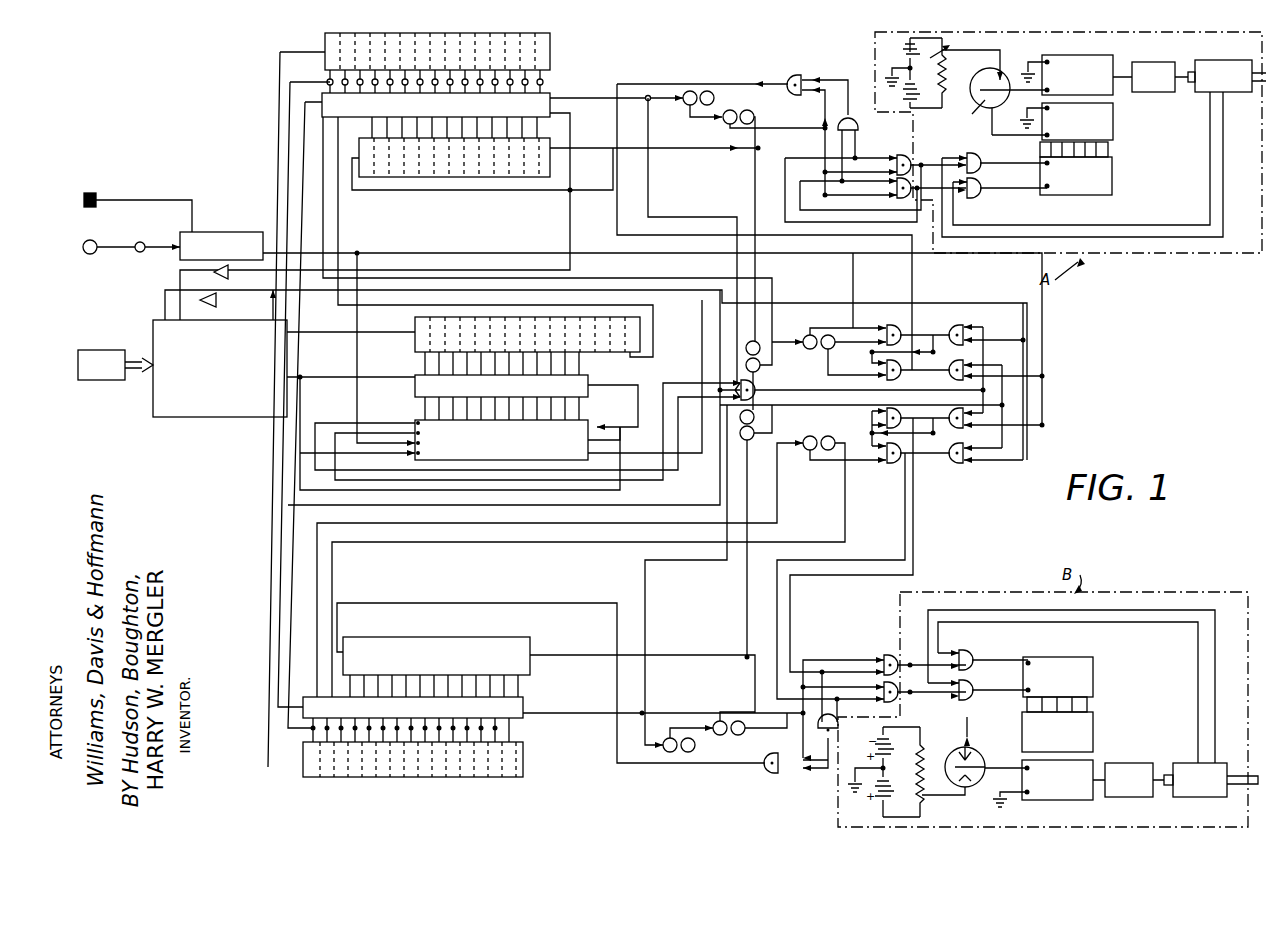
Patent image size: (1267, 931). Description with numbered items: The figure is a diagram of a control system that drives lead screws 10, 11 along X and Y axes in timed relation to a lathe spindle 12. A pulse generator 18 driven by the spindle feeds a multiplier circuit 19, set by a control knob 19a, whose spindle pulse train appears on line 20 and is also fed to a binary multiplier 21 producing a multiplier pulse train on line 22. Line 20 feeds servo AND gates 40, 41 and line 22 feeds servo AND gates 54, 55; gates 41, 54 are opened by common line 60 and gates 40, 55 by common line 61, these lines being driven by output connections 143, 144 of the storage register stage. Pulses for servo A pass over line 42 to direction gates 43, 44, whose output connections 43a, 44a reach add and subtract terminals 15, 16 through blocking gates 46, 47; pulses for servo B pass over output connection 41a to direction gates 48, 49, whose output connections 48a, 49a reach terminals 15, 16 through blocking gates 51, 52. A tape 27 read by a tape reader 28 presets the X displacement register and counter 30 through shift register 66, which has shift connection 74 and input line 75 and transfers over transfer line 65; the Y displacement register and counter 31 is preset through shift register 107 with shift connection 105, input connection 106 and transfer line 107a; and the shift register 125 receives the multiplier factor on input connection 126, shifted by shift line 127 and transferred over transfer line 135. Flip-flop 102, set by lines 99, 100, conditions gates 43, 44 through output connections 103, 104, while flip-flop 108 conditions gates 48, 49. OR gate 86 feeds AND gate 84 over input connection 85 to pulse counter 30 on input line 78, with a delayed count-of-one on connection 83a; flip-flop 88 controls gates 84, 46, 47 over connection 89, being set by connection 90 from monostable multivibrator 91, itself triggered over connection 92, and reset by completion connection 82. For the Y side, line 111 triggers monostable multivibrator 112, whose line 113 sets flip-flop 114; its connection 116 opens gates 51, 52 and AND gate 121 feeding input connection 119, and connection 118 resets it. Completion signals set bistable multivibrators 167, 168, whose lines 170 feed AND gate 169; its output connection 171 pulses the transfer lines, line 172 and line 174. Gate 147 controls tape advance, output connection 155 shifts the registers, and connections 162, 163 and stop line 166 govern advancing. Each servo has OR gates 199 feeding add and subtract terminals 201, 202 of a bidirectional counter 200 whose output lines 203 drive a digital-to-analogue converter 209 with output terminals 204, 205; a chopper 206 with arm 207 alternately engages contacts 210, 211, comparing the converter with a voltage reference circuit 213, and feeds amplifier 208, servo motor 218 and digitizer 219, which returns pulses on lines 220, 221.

The lead screw 10 is at (1258, 88).
The lead screw 11 is at (1234, 775).
The lathe spindle 12 is at (96, 240).
The add input terminal 15 is at (922, 162).
The subtract input terminal 16 is at (925, 186).
The pulse generator 18 is at (146, 241).
The multiplier circuit 19 is at (248, 232).
The control knob 19a is at (98, 196).
The line 20 is at (406, 254).
The binary multiplier 21 is at (588, 440).
The line 22 is at (650, 453).
The tape 27 is at (112, 382).
The tape reader 28 is at (168, 417).
The X displacement register and counter 30 is at (500, 177).
The Y displacement register and counter 31 is at (514, 637).
The servo AND gate 40 is at (954, 374).
The servo AND gate 41 is at (954, 418).
The output connection 41a is at (930, 436).
The line 42 is at (905, 350).
The direction AND gate 43 is at (892, 330).
The output connection 43a is at (853, 284).
The direction AND gate 44 is at (918, 373).
The output connection 44a is at (912, 286).
The blocking AND gate 46 is at (900, 156).
The blocking AND gate 47 is at (900, 195).
The direction gate 48 is at (888, 410).
The output connection 48a is at (913, 526).
The direction gate 49 is at (900, 456).
The output connection 49a is at (905, 522).
The blocking AND gate 51 is at (886, 656).
The blocking AND gate 52 is at (886, 700).
The servo AND gate 54 is at (962, 325).
The servo AND gate 55 is at (956, 462).
The common line 60 is at (970, 394).
The common line 61 is at (996, 384).
The transfer line 65 is at (305, 113).
The shift register 66 is at (550, 60).
The shift connection 74 is at (290, 84).
The line 75 is at (305, 44).
The input line 78 is at (430, 190).
The connection 82 is at (600, 150).
The connection 83a is at (578, 146).
The AND gate 84 is at (798, 80).
The input connection 85 is at (845, 80).
The OR gate 86 is at (860, 124).
The binary element 88 is at (744, 110).
The connection 89 is at (796, 130).
The connection 90 is at (722, 122).
The monostable multivibrator circuit 91 is at (683, 102).
The connection 92 is at (600, 96).
The line 99 is at (323, 225).
The line 100 is at (338, 212).
The binary element 102 is at (828, 349).
The output connection 103 is at (838, 328).
The output connection 104 is at (862, 370).
The shift connection 105 is at (288, 622).
The input connection 106 is at (280, 767).
The shift register 107 is at (486, 777).
The transfer line 107a is at (668, 512).
The binary element 108 is at (820, 450).
The line 111 is at (578, 720).
The monostable multivibrator 112 is at (666, 752).
The line 113 is at (690, 726).
The binary element 114 is at (730, 735).
The connection 116 is at (782, 716).
The connection 118 is at (755, 700).
The input connection 119 is at (420, 603).
The AND gate 121 is at (766, 770).
The shift register 125 is at (415, 326).
The input connection 126 is at (334, 336).
The shift line 127 is at (398, 380).
The transfer line 135 is at (370, 394).
The output connection 143 is at (402, 426).
The output connection 144 is at (342, 426).
The gate 147 is at (570, 218).
The output connection 155 is at (300, 384).
The input connection 162 is at (185, 283).
The input connection 163 is at (630, 396).
The line 166 is at (264, 300).
The bistable multivibrator 167 is at (760, 350).
The bistable multivibrator 168 is at (756, 428).
The AND gate 169 is at (762, 388).
The line 170 is at (775, 406).
The output connection 171 is at (718, 380).
The line 172 is at (626, 434).
The line 174 is at (433, 437).
The OR gate 199 is at (978, 160).
The bidirectional counter 200 is at (1112, 174).
The add terminal 201 is at (1044, 168).
The subtract terminal 202 is at (1044, 190).
The output lines 203 is at (1108, 149).
The output terminal 204 is at (992, 135).
The output terminal 205 is at (1040, 108).
The chopper 206 is at (972, 114).
The make-and-break arm 207 is at (975, 75).
The amplifier 208 is at (1072, 54).
The digital-to-analogue converter 209 is at (1113, 125).
The contact 210 is at (1001, 112).
The contact 211 is at (985, 61).
The voltage reference circuit 213 is at (945, 50).
The servo motor 218 is at (1168, 60).
The digitizer 219 is at (1234, 60).
The line 220 is at (1223, 152).
The line 221 is at (1210, 182).